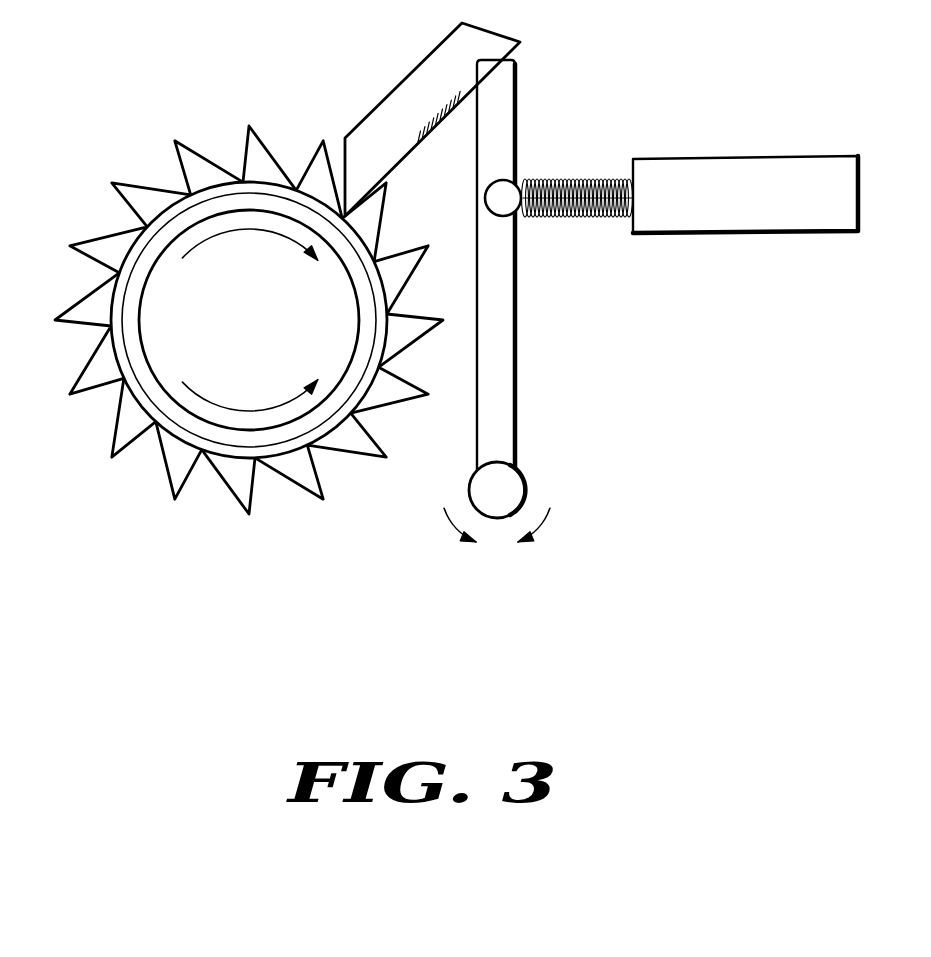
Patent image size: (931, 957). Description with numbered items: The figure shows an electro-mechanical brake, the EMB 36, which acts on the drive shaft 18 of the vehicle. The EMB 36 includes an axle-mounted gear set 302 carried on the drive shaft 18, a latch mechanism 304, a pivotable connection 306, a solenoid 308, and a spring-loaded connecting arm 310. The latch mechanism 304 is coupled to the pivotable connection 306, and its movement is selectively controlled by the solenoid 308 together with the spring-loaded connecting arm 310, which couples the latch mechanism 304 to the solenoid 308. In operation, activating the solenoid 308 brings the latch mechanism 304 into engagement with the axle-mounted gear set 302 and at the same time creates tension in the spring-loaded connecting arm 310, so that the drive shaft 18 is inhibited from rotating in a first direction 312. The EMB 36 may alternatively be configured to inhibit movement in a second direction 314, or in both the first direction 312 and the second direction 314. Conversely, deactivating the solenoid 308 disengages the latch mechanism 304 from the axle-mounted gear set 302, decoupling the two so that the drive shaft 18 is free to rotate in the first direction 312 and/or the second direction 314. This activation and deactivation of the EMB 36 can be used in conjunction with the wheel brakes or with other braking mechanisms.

The electro-mechanical brake (EMB) 36 is at (446, 699).
The axle-mounted gear set 302 is at (95, 243).
The drive shaft 18 is at (267, 336).
The latch mechanism 304 is at (403, 77).
The pivotable connection 306 is at (527, 485).
The solenoid 308 is at (742, 159).
The spring-loaded connecting arm 310 is at (577, 178).
The first direction 312 is at (245, 229).
The second direction 314 is at (247, 409).